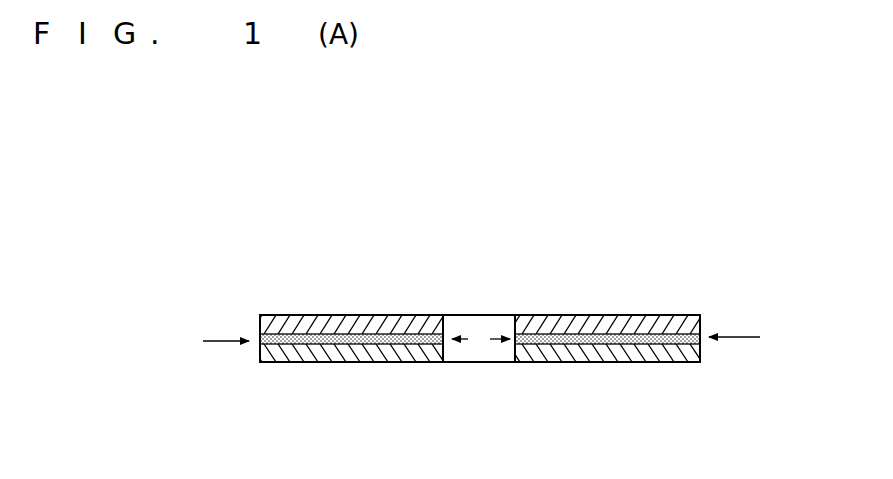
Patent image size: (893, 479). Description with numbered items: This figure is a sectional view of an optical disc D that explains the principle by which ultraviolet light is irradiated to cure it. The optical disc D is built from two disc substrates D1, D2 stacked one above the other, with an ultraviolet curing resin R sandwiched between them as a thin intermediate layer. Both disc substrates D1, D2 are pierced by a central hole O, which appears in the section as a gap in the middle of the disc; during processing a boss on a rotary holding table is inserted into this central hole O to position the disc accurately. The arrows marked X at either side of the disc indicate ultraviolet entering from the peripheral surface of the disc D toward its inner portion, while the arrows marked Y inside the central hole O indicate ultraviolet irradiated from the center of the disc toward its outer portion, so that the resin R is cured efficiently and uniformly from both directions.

The optical disc D is at (313, 293).
The disc substrate D1 is at (662, 361).
The disc substrate D2 is at (673, 318).
The ultraviolet curing resin R is at (370, 334).
The central hole O is at (514, 324).
The radial direction / section line X is at (482, 339).
The opening width Y is at (481, 340).